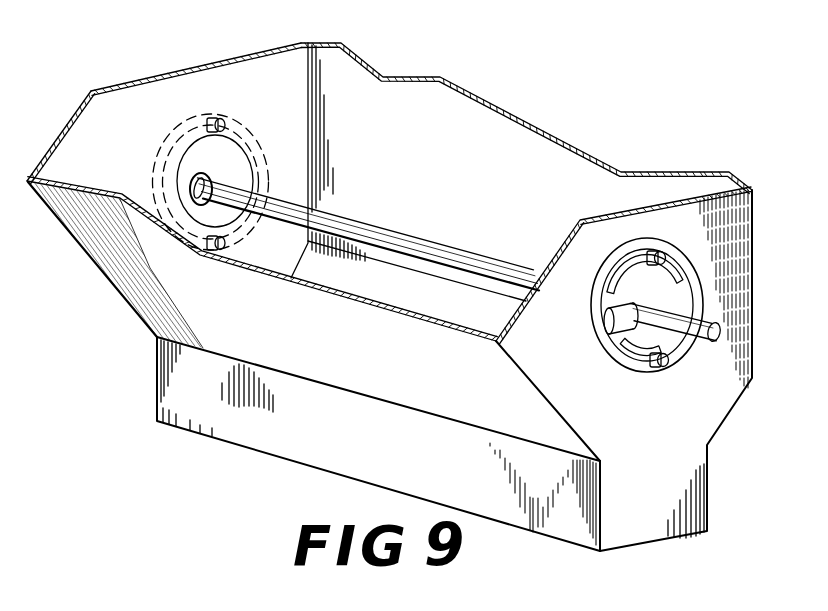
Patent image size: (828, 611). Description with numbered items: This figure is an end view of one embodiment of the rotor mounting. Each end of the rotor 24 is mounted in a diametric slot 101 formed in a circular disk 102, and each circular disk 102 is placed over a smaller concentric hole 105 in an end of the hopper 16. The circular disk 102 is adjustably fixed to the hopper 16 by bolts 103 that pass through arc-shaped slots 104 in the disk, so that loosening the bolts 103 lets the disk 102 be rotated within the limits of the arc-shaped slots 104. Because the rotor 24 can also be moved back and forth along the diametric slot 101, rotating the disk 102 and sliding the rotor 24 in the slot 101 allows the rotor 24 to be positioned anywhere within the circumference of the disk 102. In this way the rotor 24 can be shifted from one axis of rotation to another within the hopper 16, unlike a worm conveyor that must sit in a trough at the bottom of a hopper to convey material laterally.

The hopper 16 is at (473, 140).
The rotor 24 is at (716, 334).
The diametric slot 101 is at (230, 174).
The circular disk 102 is at (192, 118).
The bolt 103 is at (233, 118).
The arc-shaped slot 104 is at (628, 250).
The concentric hole 105 is at (190, 157).